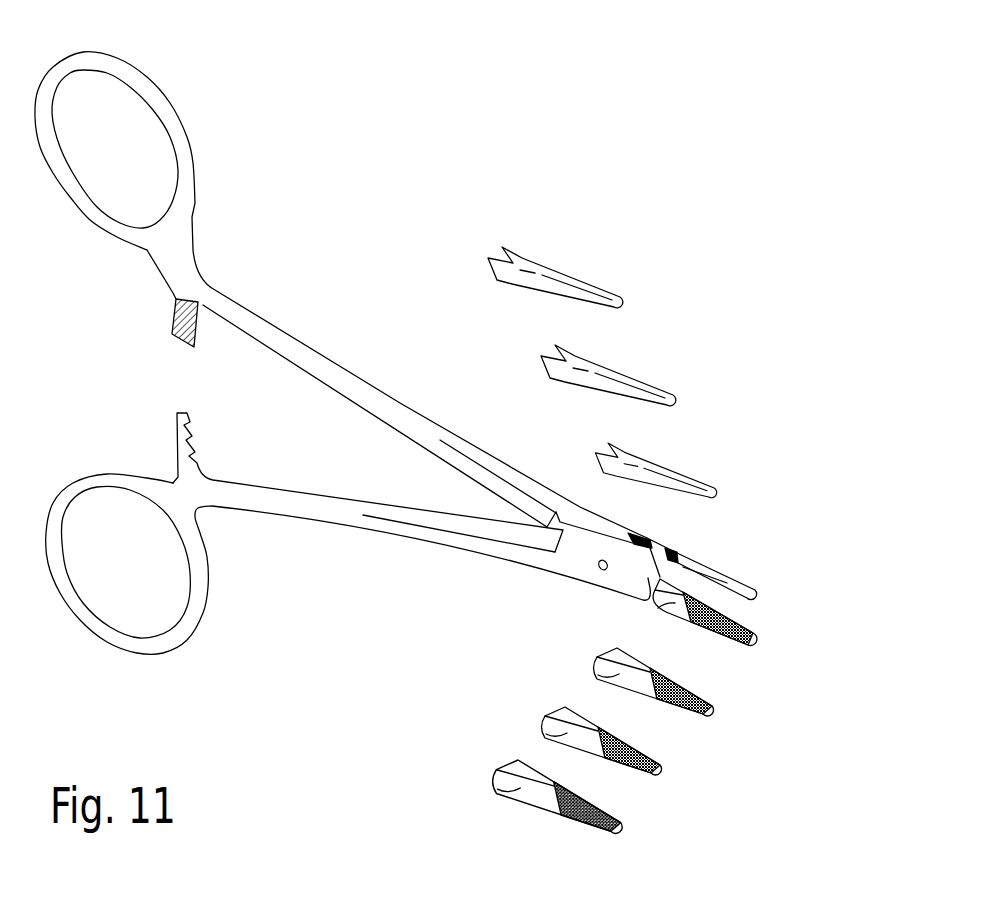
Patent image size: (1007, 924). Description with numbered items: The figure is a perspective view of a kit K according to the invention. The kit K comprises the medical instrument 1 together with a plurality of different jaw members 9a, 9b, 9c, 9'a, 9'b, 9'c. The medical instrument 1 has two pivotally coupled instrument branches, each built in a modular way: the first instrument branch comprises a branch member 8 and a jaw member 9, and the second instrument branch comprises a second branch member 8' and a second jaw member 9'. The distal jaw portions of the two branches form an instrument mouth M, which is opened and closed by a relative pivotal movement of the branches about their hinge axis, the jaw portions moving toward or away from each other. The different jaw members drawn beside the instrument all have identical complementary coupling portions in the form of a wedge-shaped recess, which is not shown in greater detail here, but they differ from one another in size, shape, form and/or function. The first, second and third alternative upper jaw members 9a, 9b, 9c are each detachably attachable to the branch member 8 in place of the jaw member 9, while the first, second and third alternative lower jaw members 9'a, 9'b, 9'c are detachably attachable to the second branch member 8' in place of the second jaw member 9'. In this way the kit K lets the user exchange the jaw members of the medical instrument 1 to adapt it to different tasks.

The kit K is at (607, 103).
The medical instrument 1 is at (398, 320).
The branch member 8 is at (348, 534).
The second branch member 8' is at (341, 295).
The jaw member 9 is at (702, 552).
The second jaw member 9' is at (705, 635).
The first alternative upper jaw member 9a is at (577, 282).
The second alternative upper jaw member 9b is at (637, 377).
The third alternative upper jaw member 9c is at (673, 473).
The first alternative lower jaw member 9'a is at (656, 708).
The second alternative lower jaw member 9'b is at (617, 772).
The third alternative lower jaw member 9'c is at (570, 827).
The instrument mouth M is at (747, 615).